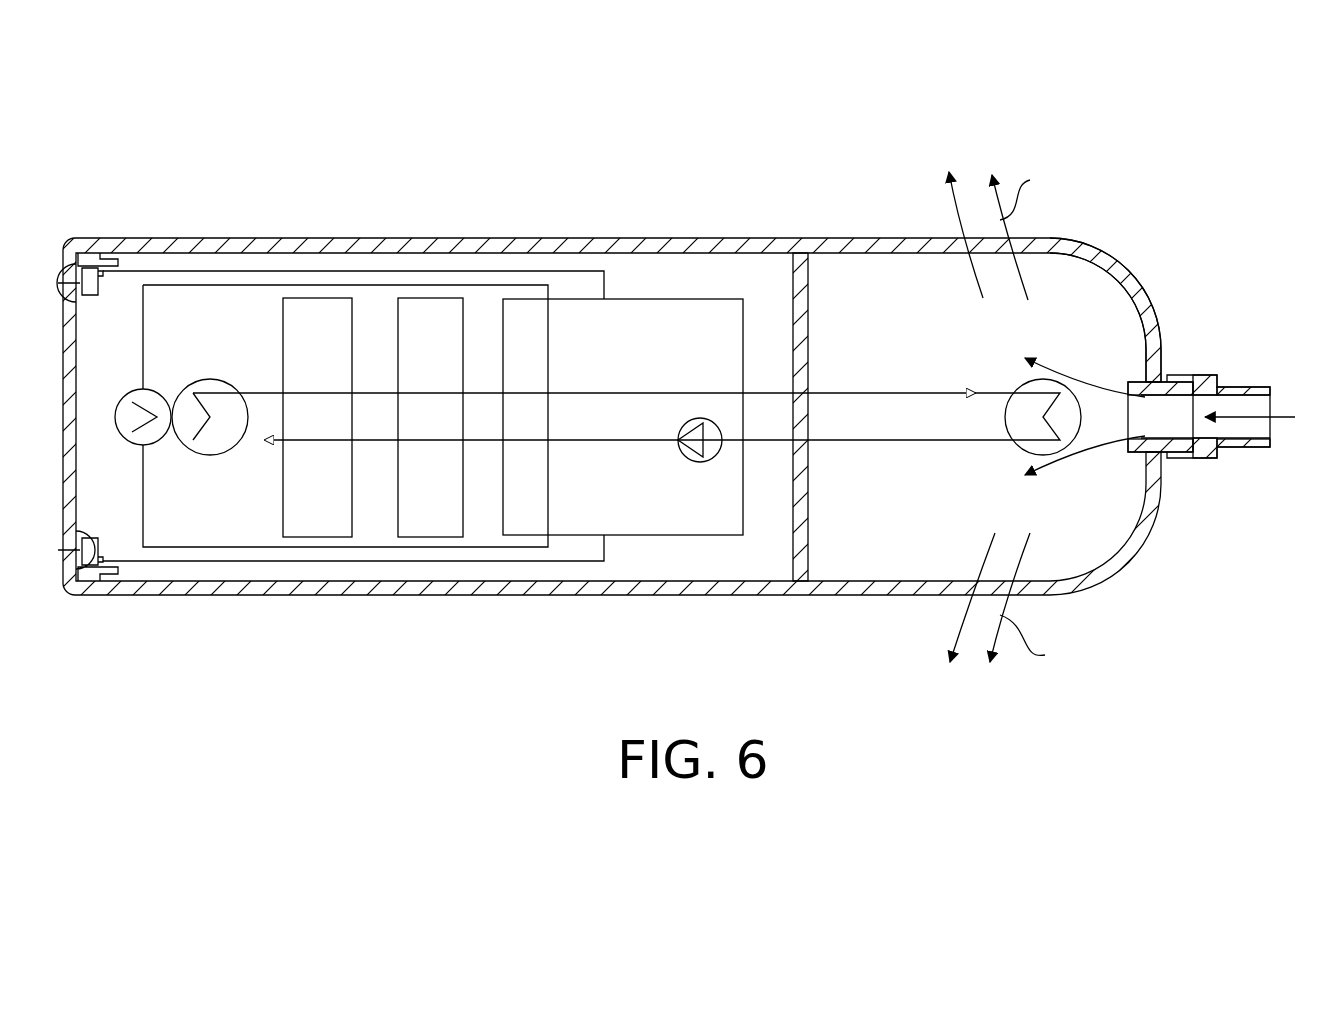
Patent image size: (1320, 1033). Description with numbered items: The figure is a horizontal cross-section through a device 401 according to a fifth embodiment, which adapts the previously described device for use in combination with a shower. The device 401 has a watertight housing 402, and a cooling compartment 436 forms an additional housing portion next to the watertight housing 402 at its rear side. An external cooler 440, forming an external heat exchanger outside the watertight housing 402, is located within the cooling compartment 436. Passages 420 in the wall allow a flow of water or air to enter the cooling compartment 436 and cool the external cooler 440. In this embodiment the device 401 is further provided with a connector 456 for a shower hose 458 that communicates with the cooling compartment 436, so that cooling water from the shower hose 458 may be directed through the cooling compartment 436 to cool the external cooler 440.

The device 401 is at (686, 391).
The watertight housing 402 is at (396, 592).
The passages 420 is at (878, 246).
The cooling compartment 436 is at (1058, 308).
The external cooler 440 is at (1073, 395).
The connector 456 is at (1157, 450).
The shower hose 458 is at (1205, 378).